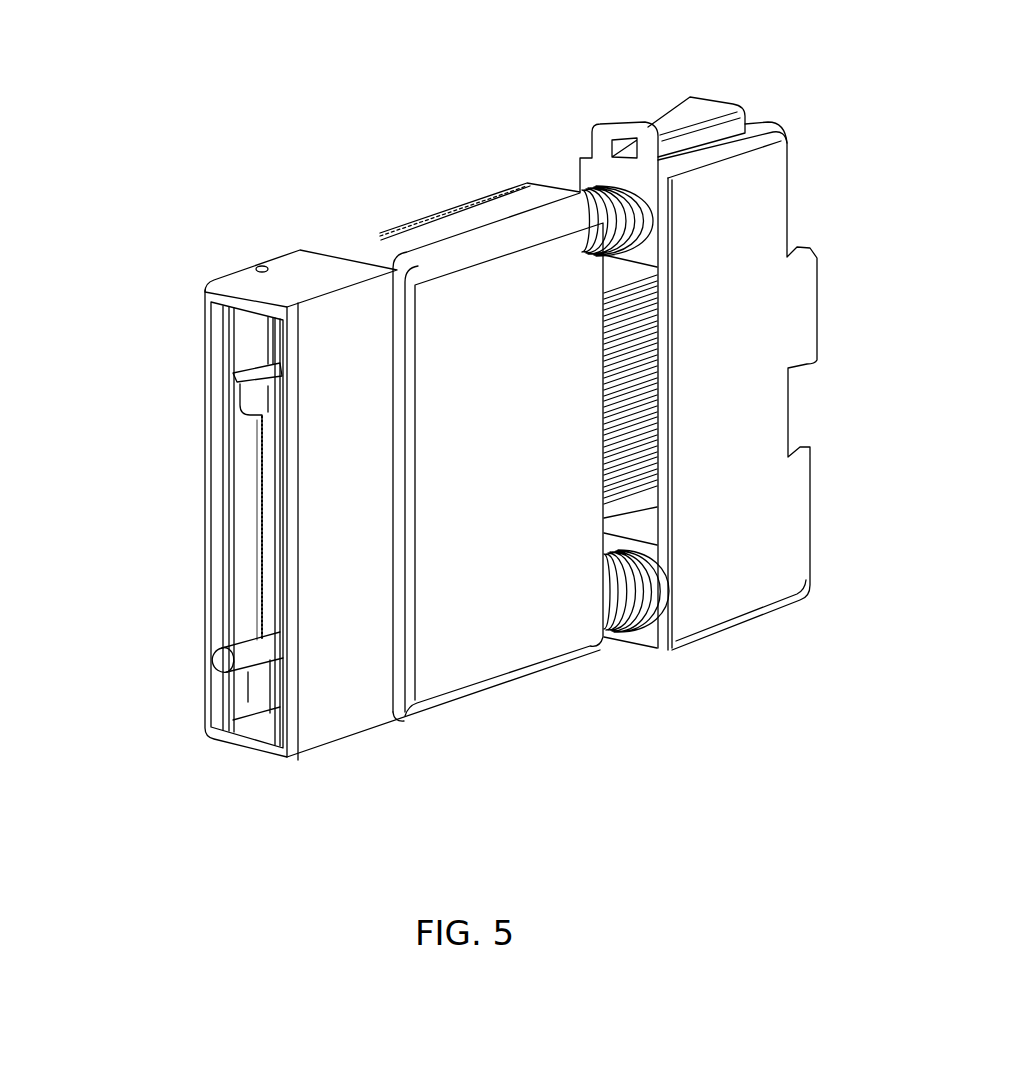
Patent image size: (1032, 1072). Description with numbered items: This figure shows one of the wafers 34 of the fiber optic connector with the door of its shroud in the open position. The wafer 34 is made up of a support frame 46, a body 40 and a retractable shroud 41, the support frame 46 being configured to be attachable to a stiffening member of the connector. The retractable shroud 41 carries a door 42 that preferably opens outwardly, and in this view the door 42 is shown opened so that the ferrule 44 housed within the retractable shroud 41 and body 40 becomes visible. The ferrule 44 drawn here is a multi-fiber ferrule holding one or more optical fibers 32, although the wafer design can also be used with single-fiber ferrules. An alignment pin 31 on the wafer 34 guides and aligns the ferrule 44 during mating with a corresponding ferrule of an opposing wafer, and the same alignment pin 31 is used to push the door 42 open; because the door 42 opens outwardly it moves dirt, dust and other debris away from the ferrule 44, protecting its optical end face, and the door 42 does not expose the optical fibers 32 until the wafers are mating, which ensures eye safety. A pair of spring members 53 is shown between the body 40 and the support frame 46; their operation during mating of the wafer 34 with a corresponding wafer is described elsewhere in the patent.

The wafer 34 is at (545, 137).
The retractable shroud 41 is at (318, 270).
The door 42 is at (243, 342).
The ferrule 44 is at (240, 455).
The optical fibers 32 is at (263, 553).
The alignment pin 31 is at (252, 667).
The body 40 is at (543, 613).
The spring members 53 is at (633, 590).
The support frame 46 is at (763, 527).